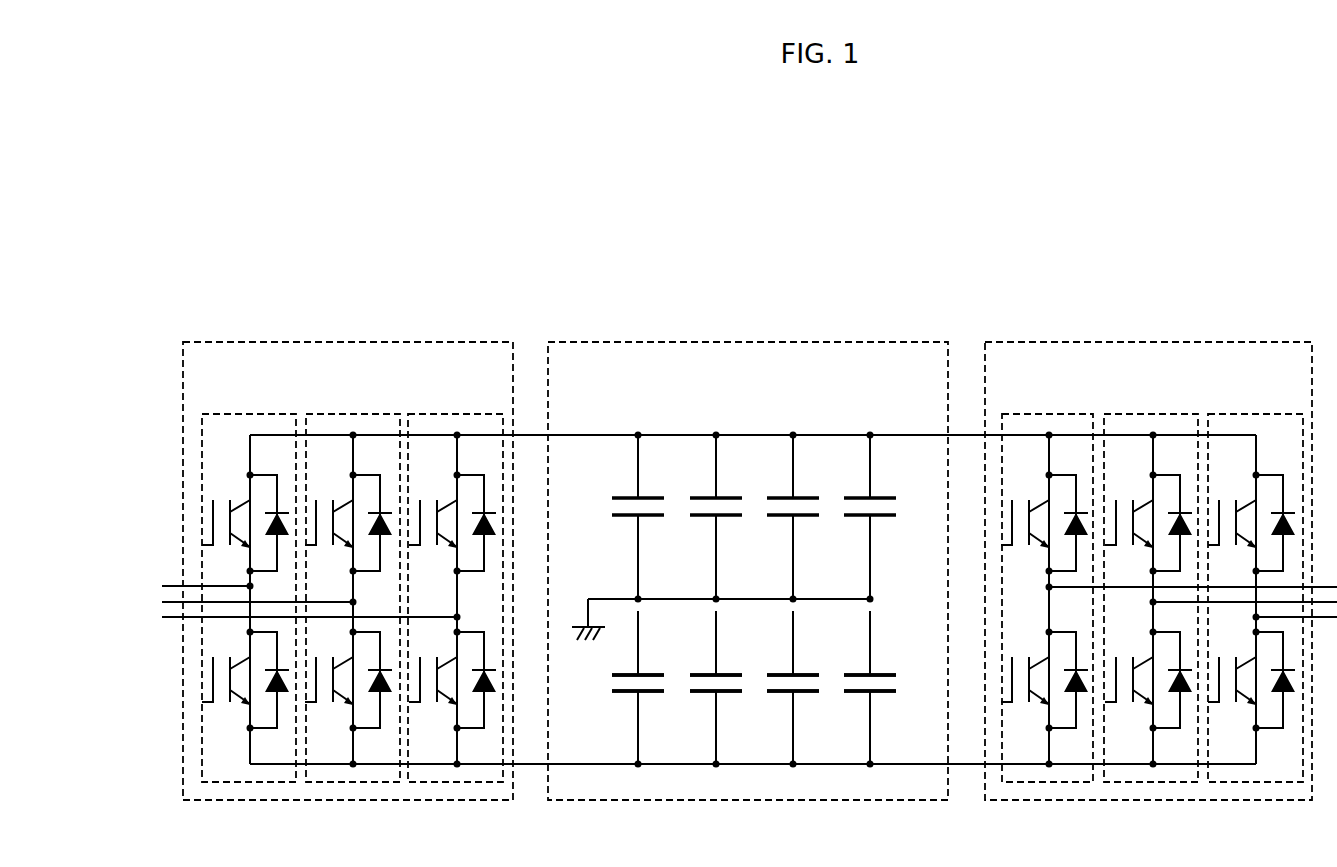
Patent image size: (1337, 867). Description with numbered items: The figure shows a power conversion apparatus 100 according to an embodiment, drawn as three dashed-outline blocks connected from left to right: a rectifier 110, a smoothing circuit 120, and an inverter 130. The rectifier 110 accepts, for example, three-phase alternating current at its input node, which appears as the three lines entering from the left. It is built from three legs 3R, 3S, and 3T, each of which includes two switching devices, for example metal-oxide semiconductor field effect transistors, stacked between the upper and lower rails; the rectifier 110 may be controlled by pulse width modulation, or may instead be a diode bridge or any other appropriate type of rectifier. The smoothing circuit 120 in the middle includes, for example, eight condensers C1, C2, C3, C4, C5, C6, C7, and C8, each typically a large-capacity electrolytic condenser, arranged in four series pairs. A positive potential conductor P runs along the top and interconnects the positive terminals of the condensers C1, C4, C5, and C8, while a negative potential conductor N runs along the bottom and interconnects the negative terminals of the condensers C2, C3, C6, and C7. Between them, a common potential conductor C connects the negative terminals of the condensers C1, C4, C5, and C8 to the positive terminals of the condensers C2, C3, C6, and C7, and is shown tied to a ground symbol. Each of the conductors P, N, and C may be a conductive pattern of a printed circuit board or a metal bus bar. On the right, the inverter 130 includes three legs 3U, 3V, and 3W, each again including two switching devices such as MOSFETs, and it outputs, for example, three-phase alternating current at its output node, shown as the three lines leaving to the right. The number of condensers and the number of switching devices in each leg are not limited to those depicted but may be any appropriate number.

The power conversion apparatus 100 is at (1271, 271).
The rectifier 110 is at (350, 341).
The smoothing circuit 120 is at (744, 341).
The inverter 130 is at (1149, 341).
The leg 3R is at (247, 413).
The leg 3S is at (350, 413).
The leg 3T is at (456, 413).
The leg 3U is at (1046, 413).
The leg 3V is at (1150, 413).
The leg 3W is at (1253, 413).
The condenser C1 is at (651, 496).
The condenser C2 is at (650, 694).
The condenser C3 is at (728, 694).
The condenser C4 is at (729, 496).
The condenser C5 is at (807, 496).
The condenser C6 is at (805, 694).
The condenser C7 is at (882, 694).
The condenser C8 is at (885, 496).
The positive potential conductor P is at (592, 433).
The common potential conductor C is at (601, 597).
The negative potential conductor N is at (591, 763).